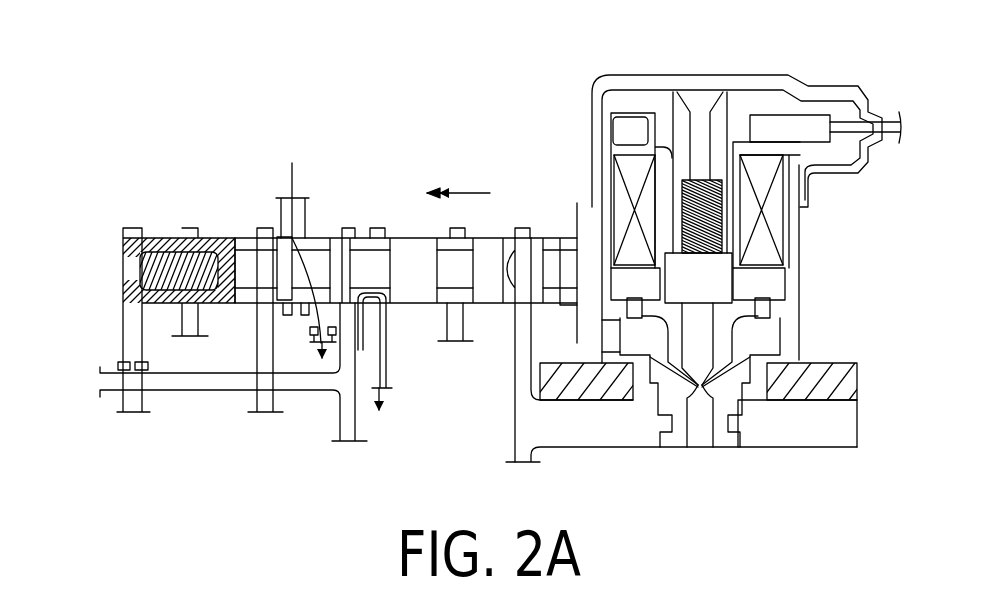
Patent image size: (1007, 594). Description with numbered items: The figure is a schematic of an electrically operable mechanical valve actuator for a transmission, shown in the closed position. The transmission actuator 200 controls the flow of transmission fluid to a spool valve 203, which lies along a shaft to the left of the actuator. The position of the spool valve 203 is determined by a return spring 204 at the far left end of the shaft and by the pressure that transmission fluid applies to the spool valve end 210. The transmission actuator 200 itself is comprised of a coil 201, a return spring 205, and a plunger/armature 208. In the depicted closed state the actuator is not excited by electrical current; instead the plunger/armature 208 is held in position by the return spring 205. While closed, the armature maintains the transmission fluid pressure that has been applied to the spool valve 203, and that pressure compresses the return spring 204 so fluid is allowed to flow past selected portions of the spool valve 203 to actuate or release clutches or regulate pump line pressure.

The transmission actuator 200 is at (595, 88).
The coil 201 is at (767, 253).
The spool valve 203 is at (241, 248).
The return spring 204 is at (104, 293).
The return spring 205 is at (713, 175).
The plunger/armature 208 is at (700, 357).
The spool valve end 210 is at (510, 248).